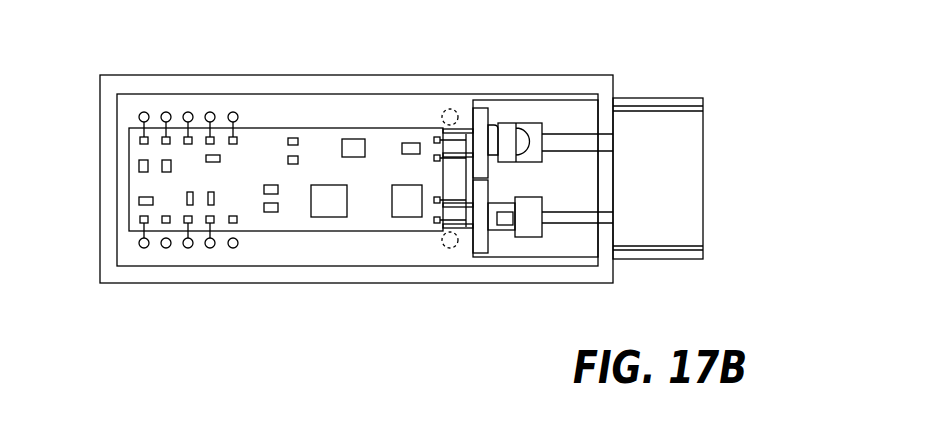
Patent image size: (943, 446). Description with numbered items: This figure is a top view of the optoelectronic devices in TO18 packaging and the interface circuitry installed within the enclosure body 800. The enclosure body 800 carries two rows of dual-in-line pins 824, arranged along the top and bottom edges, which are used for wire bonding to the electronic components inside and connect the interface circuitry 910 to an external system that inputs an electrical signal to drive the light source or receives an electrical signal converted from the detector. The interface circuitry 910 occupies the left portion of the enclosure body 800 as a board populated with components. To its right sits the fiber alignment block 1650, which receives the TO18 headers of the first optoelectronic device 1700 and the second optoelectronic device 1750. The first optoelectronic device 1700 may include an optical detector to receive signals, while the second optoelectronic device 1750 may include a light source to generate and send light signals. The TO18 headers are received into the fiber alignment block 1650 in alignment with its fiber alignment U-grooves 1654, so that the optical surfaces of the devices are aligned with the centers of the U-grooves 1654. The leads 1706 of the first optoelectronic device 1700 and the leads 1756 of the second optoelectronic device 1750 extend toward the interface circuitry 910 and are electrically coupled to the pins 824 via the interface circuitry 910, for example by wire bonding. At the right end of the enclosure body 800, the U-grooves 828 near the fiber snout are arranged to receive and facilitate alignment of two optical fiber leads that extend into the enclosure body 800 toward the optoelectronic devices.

The enclosure body 800 is at (113, 77).
The pins 824 is at (192, 247).
The interface circuitry 910 is at (350, 127).
The leads 1706 is at (460, 128).
The leads 1756 is at (465, 232).
The first optoelectronic device 1700 is at (475, 142).
The fiber alignment block 1650 is at (557, 115).
The fiber alignment U-grooves 1654 is at (588, 213).
The second optoelectronic device 1750 is at (485, 217).
The U-grooves 828 is at (608, 213).